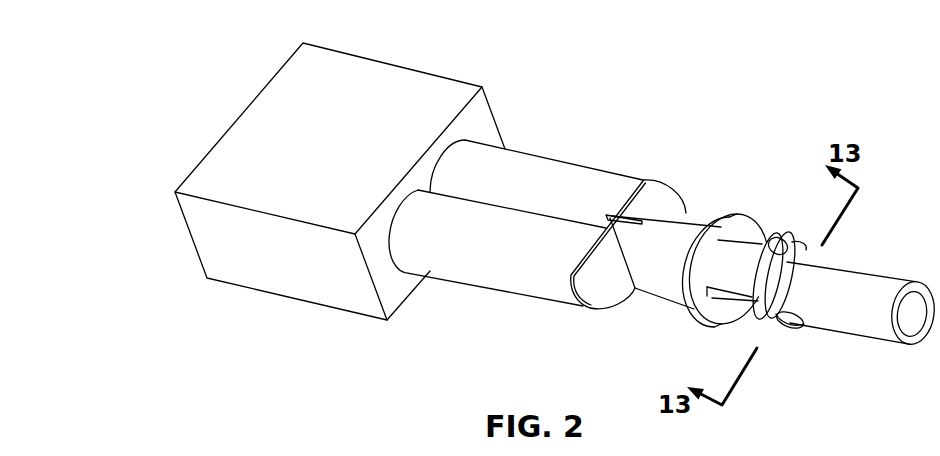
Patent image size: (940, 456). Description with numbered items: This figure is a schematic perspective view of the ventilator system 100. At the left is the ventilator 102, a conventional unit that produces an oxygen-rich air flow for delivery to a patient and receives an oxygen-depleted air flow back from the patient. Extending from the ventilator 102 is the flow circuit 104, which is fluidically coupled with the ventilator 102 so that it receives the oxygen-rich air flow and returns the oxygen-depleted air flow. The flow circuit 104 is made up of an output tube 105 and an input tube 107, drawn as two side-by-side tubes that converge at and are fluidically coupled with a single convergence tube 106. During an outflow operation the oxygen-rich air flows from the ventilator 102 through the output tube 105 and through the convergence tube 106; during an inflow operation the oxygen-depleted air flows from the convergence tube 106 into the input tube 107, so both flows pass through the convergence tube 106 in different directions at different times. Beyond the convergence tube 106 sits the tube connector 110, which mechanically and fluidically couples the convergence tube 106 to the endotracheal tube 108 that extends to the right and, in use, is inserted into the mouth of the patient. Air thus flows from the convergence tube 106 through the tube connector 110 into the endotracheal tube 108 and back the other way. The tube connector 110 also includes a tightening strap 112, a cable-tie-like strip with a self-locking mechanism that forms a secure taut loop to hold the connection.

The ventilator system 100 is at (707, 75).
The ventilator 102 is at (407, 80).
The flow circuit 104 is at (625, 166).
The output tube 105 is at (530, 167).
The convergence tube 106 is at (692, 232).
The input tube 107 is at (512, 263).
The endotracheal tube 108 is at (833, 267).
The tube connector 110 is at (745, 319).
The tightening strap 112 is at (784, 331).